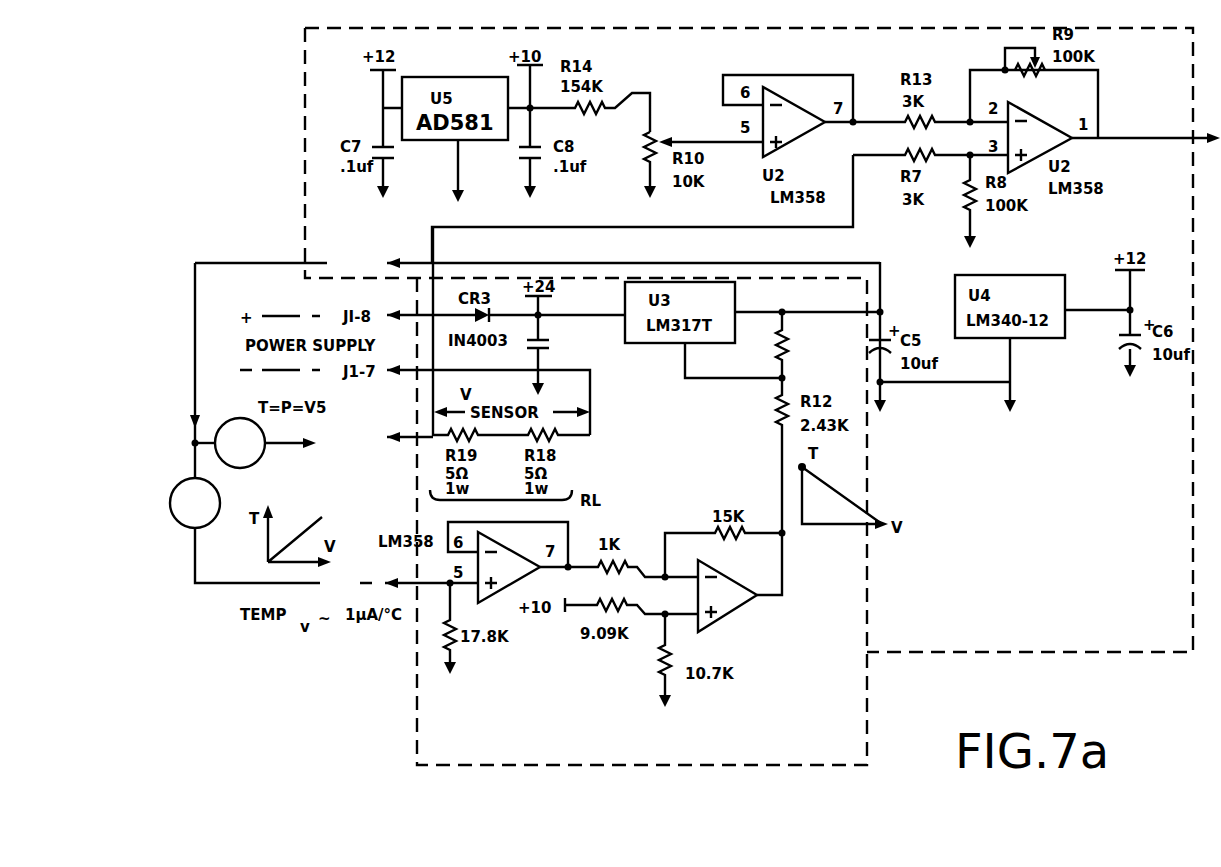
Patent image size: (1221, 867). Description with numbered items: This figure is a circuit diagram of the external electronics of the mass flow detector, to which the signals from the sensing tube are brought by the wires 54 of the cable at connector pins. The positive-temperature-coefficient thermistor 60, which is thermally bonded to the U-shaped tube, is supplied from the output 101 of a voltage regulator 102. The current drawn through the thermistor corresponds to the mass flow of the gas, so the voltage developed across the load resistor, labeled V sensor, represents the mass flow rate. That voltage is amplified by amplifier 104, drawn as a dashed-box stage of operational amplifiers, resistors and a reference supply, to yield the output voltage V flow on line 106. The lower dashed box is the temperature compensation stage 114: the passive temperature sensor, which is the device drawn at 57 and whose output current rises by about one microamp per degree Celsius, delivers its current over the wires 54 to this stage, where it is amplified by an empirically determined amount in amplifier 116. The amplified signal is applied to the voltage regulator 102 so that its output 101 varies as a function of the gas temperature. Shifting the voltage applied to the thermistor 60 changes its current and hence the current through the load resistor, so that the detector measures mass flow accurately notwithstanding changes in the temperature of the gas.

The wires 54 is at (270, 263).
The temperature sensor 590 57 is at (202, 527).
The PTC thermistor 60 is at (250, 466).
The output 101 is at (883, 285).
The voltage regulator 102 is at (764, 346).
The amplifier 104 is at (1172, 638).
The line 106 is at (1128, 139).
The temperature compensation stage 114 is at (838, 756).
The amplifier 116 is at (762, 603).